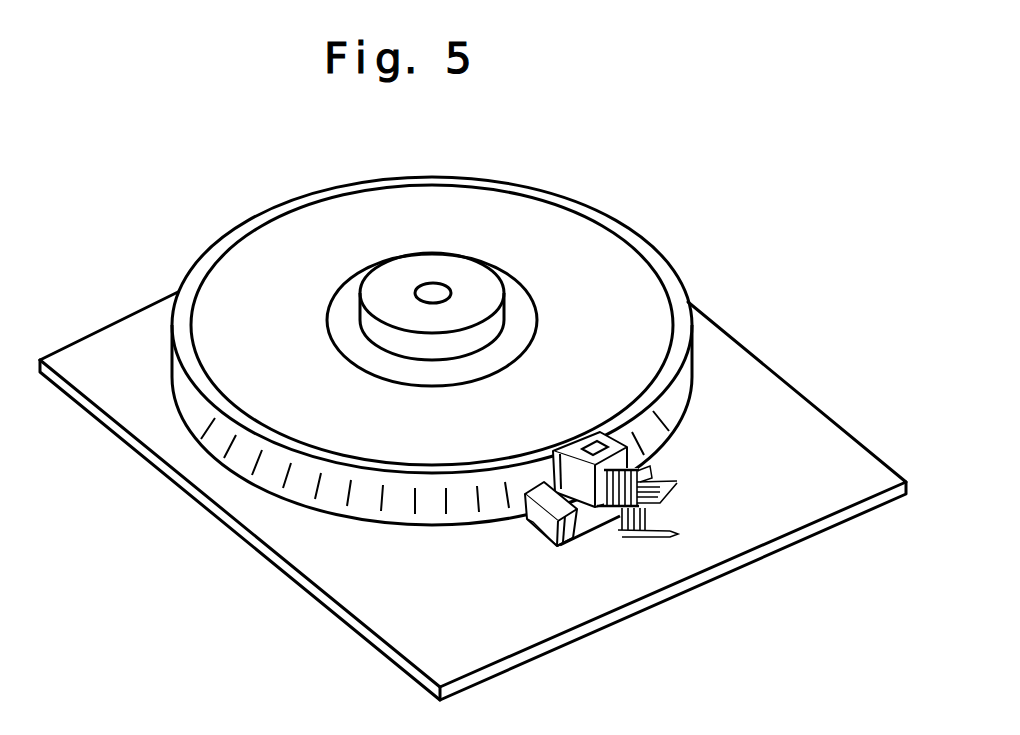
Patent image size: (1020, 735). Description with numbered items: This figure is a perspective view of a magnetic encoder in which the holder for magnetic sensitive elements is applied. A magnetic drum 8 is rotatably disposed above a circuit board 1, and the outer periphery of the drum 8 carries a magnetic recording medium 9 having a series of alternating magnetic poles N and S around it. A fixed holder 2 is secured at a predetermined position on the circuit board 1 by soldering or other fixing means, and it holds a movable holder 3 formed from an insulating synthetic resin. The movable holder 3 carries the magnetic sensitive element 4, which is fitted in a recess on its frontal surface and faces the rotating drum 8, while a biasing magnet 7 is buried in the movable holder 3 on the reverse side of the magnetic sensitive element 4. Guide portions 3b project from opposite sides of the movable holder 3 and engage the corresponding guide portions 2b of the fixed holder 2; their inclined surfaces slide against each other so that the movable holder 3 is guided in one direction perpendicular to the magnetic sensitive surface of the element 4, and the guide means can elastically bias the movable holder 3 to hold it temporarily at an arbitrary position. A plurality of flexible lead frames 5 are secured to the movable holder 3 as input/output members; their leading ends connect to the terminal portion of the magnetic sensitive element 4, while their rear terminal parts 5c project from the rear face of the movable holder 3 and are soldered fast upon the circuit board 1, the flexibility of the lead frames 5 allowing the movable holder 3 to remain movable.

The circuit board 1 is at (817, 422).
The magnetic drum 8 is at (650, 292).
The magnetic recording medium 9 is at (682, 337).
The fixed holder 2 is at (592, 533).
The movable holder 3 is at (535, 494).
The guide portions 3b is at (573, 541).
The magnetic sensitive element 4 is at (577, 437).
The biasing magnet 7 is at (601, 434).
The guide portions 2b is at (645, 470).
The lead frames 5 is at (667, 481).
The rear terminal parts 5c is at (662, 534).